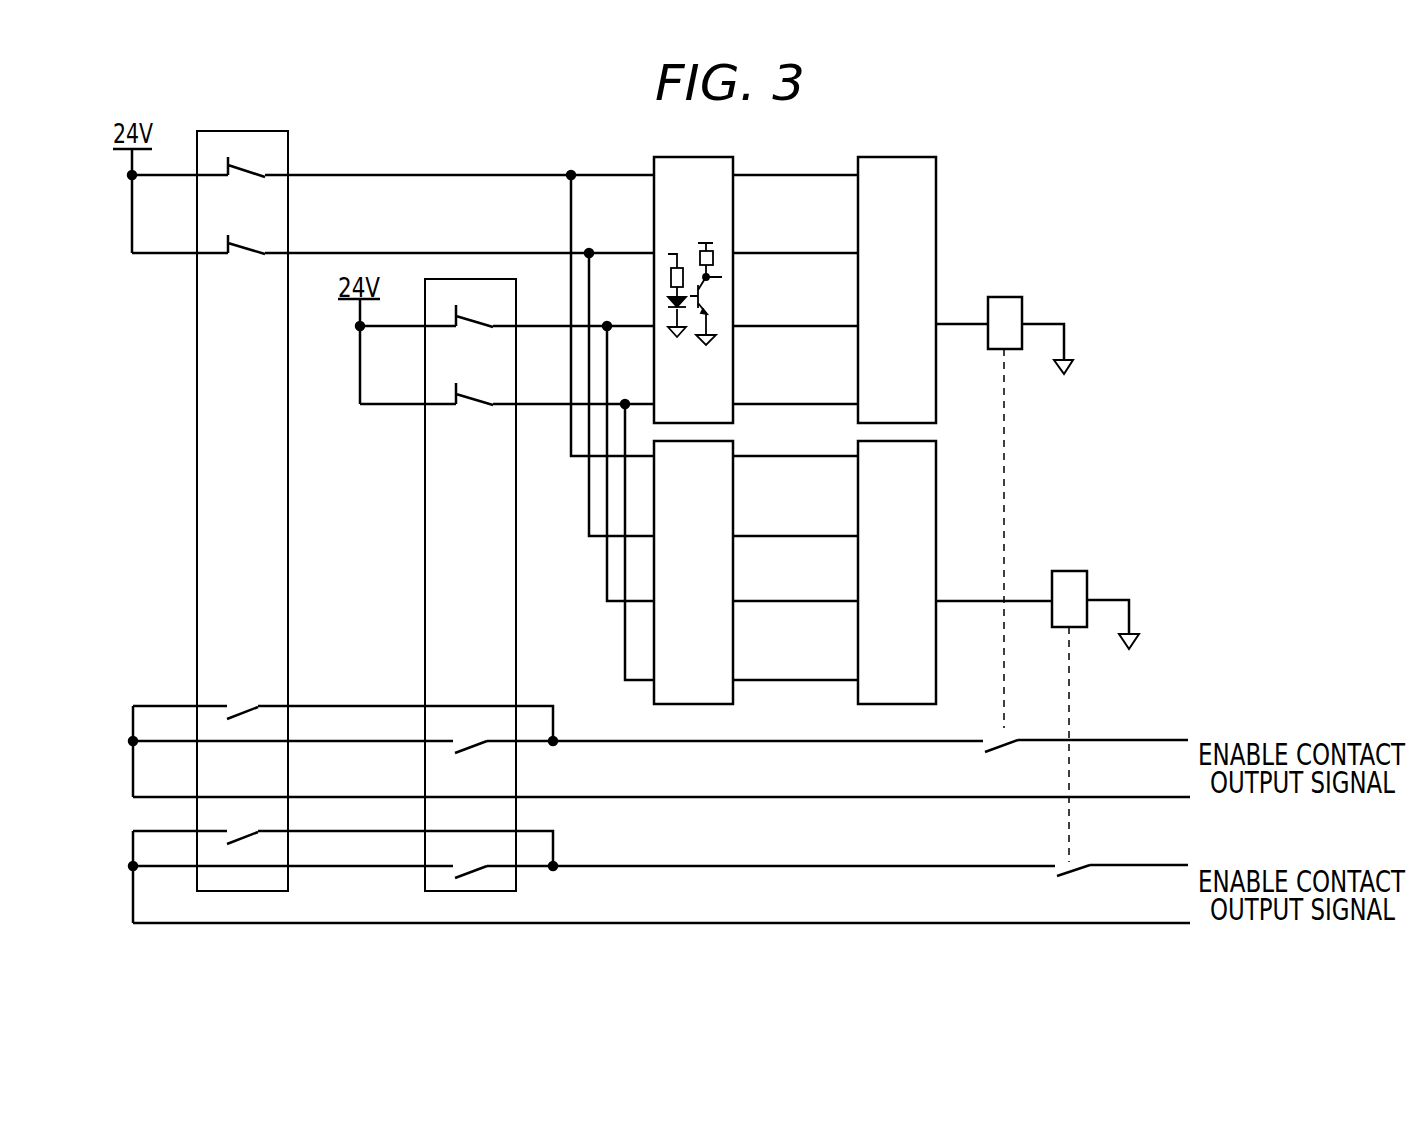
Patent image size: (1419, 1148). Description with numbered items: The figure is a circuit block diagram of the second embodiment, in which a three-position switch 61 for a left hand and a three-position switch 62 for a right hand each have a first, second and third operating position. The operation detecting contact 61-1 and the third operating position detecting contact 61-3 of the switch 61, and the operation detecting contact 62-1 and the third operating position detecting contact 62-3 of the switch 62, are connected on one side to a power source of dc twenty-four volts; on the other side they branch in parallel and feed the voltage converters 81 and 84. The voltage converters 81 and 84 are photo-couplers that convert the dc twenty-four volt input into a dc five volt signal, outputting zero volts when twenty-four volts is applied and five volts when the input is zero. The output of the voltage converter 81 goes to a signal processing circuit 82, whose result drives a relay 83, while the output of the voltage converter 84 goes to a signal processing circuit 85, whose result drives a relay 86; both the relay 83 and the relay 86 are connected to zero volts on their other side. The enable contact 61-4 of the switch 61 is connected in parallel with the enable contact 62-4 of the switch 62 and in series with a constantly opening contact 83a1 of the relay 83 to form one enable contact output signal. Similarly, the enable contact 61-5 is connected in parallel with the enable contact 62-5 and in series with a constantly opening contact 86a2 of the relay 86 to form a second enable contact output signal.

The three-position switch for a left hand 61 is at (197, 566).
The operation detecting contact 61-1 is at (240, 257).
The third operating position detecting contact 61-3 is at (240, 180).
The enable contact 61-4 is at (240, 703).
The enable contact 61-5 is at (245, 843).
The three-position switch for a right hand 62 is at (425, 566).
The operation detecting contact 62-1 is at (468, 405).
The third operating position detecting contact 62-3 is at (468, 328).
The enable contact 62-4 is at (482, 752).
The enable contact 62-5 is at (482, 877).
The voltage converter 81 is at (693, 290).
The signal processing circuit 82 is at (897, 290).
The relay 83 is at (1005, 338).
The constantly opening contact 83a1 is at (995, 570).
The voltage converter 84 is at (693, 572).
The signal processing circuit 85 is at (897, 572).
The relay 86 is at (1039, 613).
The constantly opening contact 86a2 is at (1075, 769).